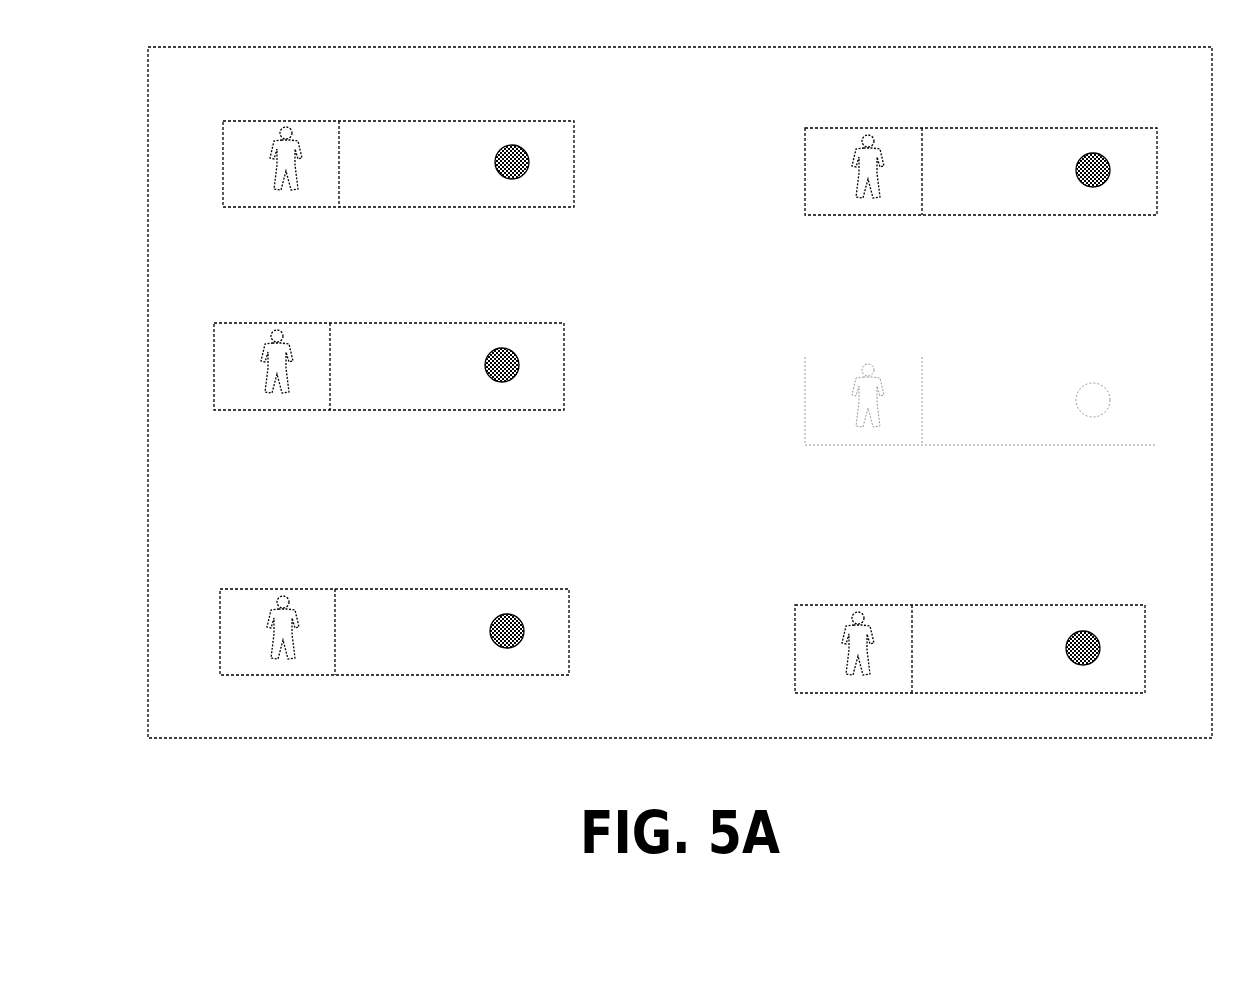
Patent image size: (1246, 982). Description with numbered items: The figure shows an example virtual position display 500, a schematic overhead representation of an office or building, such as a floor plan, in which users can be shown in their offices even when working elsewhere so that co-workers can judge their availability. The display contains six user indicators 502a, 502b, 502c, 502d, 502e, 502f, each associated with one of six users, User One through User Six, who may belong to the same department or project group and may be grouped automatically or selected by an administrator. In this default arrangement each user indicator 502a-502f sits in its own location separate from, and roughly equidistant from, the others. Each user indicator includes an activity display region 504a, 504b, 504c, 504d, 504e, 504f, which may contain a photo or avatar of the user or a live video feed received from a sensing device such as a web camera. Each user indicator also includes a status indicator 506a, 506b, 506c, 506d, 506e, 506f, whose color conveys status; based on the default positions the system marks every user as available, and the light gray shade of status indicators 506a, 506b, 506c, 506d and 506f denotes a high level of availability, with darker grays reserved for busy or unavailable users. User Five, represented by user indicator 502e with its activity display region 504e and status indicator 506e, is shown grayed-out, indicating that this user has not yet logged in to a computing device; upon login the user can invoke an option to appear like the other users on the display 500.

The virtual position display 500 is at (699, 494).
The user indicator 502a is at (397, 118).
The user indicator 502b is at (396, 320).
The user indicator 502c is at (404, 587).
The user indicator 502d is at (1006, 126).
The user indicator 502e is at (993, 357).
The user indicator 502f is at (968, 605).
The activity display region 504a is at (283, 192).
The activity display region 504b is at (283, 400).
The activity display region 504c is at (283, 660).
The activity display region 504d is at (862, 207).
The activity display region 504e is at (840, 428).
The activity display region 504f is at (830, 677).
The status indicator 506a is at (527, 155).
The status indicator 506b is at (521, 363).
The status indicator 506c is at (520, 628).
The status indicator 506d is at (1098, 180).
The status indicator 506e is at (1087, 382).
The status indicator 506f is at (1085, 632).